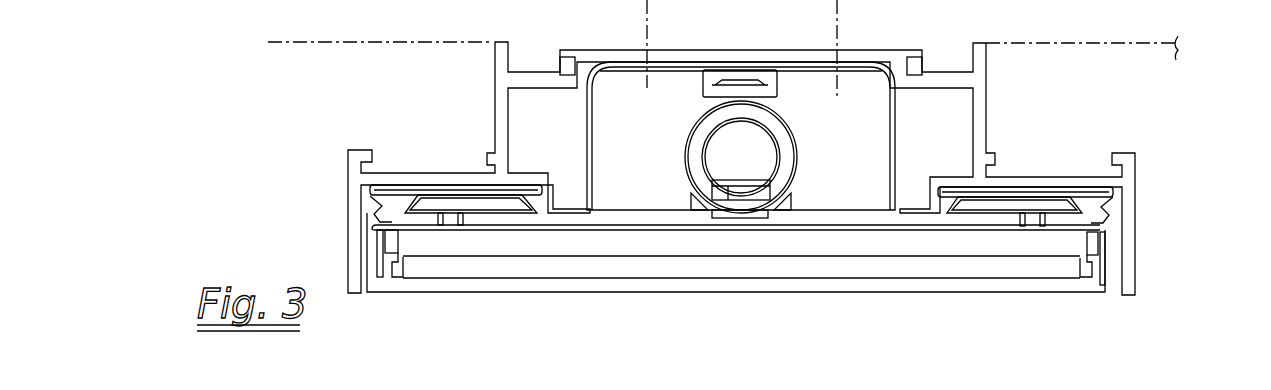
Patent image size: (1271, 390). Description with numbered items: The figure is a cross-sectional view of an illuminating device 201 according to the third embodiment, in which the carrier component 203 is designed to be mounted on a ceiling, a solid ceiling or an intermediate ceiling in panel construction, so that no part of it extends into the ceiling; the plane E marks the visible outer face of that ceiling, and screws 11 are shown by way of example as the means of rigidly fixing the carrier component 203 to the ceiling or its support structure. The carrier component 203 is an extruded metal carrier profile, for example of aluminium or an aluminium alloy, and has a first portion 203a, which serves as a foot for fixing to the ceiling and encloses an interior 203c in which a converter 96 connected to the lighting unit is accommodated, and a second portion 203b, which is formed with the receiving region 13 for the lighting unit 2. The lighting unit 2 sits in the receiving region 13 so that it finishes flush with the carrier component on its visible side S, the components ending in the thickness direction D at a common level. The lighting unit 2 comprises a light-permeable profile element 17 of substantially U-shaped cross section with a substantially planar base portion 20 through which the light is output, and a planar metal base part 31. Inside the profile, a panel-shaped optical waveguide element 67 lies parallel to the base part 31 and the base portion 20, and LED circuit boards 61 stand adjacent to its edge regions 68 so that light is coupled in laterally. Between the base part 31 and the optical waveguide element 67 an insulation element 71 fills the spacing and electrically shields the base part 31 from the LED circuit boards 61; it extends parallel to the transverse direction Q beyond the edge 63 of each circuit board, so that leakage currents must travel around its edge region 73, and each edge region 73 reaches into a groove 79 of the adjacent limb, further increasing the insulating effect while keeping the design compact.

The lighting unit 2 is at (752, 308).
The screws 11 is at (652, 26).
The receiving region 13 is at (1103, 233).
The profile element 17 is at (642, 283).
The base portion 20 is at (863, 287).
The planar base part 31 is at (676, 220).
The LED circuit board 61 is at (383, 278).
The edge 63 is at (387, 241).
The optical waveguide element 67 is at (557, 240).
The edge regions 68 is at (420, 240).
The insulation element 71 is at (822, 230).
The edge region 73 is at (380, 220).
The groove 79 is at (377, 226).
The converter 96 is at (620, 105).
The illuminating device 201 is at (228, 182).
The carrier component 203 is at (985, 122).
The first portion 203a is at (478, 48).
The second portion 203b is at (1150, 298).
The interior 203c is at (956, 141).
The plane E is at (267, 40).
The thickness direction D is at (88, 222).
The transverse direction Q is at (172, 268).
The visible side S is at (592, 307).